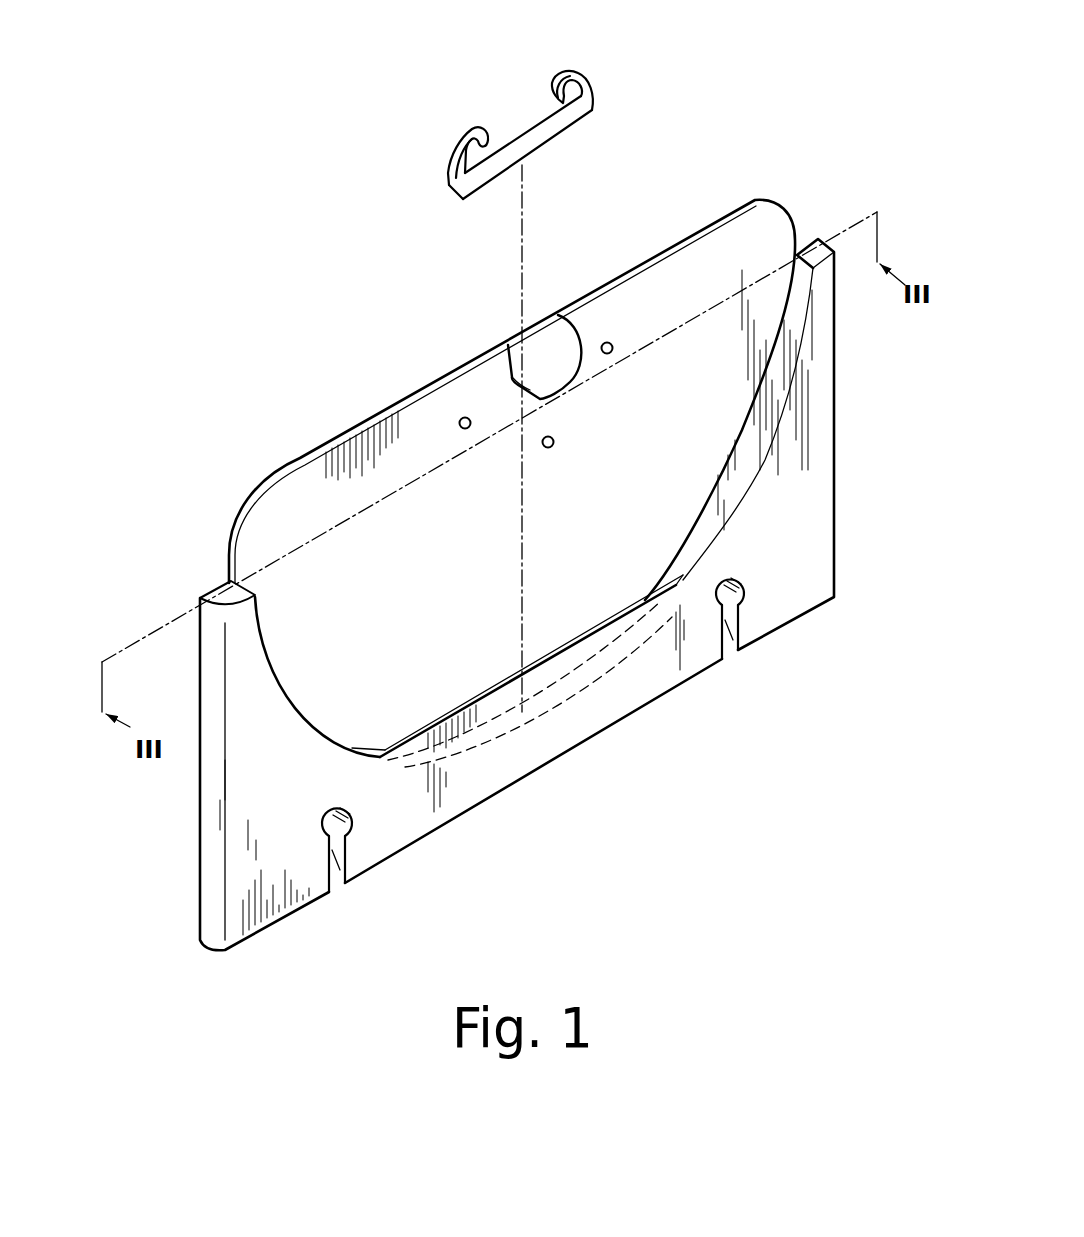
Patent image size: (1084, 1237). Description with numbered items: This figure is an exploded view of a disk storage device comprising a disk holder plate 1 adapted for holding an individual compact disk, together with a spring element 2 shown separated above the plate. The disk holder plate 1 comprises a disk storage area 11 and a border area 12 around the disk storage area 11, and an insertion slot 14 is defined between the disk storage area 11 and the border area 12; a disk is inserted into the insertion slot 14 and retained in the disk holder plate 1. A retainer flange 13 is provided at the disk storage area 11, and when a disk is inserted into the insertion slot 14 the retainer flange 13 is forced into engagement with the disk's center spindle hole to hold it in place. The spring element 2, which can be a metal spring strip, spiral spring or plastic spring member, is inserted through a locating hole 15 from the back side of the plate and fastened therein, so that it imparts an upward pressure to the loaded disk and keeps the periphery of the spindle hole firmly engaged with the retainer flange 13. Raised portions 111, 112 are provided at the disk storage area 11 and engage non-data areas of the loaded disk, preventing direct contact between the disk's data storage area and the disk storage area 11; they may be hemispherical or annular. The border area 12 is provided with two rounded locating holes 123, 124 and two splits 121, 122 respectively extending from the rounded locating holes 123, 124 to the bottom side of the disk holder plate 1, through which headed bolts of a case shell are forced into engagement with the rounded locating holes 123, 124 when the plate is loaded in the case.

The disk holder plate 1 is at (216, 557).
The spring element 2 is at (572, 73).
The disk storage area 11 is at (762, 252).
The border area 12 is at (802, 547).
The retainer flange 13 is at (552, 360).
The insertion slot 14 is at (446, 703).
The locating hole 15 is at (535, 710).
The raised portion 111 is at (459, 423).
The raised portion 112 is at (612, 344).
The split 121 is at (343, 887).
The split 122 is at (736, 654).
The rounded locating hole 123 is at (355, 810).
The rounded locating hole 124 is at (737, 572).